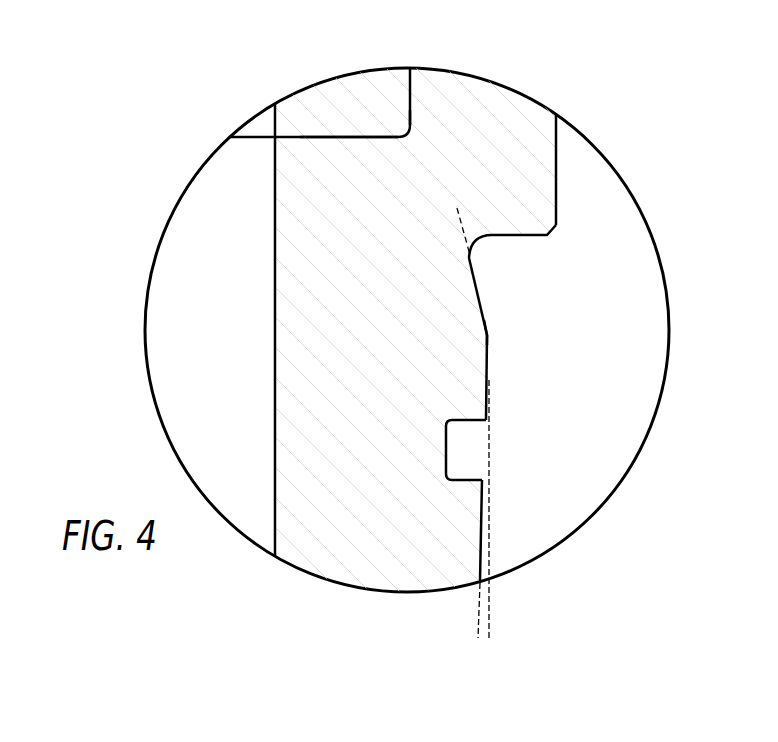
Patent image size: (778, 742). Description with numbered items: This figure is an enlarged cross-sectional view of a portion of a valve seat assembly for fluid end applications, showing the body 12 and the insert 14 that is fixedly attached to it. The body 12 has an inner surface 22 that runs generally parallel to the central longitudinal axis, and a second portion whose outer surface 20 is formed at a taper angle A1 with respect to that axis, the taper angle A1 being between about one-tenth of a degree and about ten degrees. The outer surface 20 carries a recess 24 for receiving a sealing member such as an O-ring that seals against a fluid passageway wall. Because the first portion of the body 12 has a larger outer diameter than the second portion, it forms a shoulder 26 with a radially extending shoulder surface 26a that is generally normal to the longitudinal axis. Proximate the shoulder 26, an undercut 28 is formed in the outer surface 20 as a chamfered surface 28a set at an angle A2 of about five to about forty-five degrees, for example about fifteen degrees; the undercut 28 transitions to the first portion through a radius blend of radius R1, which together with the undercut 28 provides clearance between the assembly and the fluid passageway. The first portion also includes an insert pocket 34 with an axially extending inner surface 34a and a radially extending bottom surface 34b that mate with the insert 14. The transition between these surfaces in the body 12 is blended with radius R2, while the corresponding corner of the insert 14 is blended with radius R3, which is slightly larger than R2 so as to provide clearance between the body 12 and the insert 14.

The body 12 is at (503, 512).
The insert 14 is at (282, 90).
The outer surface 20 is at (490, 386).
The inner surface 22 is at (273, 338).
The recess 24 is at (467, 445).
The shoulder 26 is at (545, 247).
The shoulder surface 26a is at (517, 238).
The undercut 28 is at (490, 292).
The chamfered surface 28a is at (487, 311).
The insert pocket 34 is at (380, 110).
The inner surface of insert pocket 34a is at (399, 89).
The bottom surface of insert pocket 34b is at (303, 86).
The radius of radius blend R1 is at (481, 249).
The radius of body radius blend R2 is at (402, 124).
The radius of insert radius blend R3 is at (330, 137).
The taper angle A1 is at (428, 620).
The angle of chamfered surface A2 is at (455, 220).